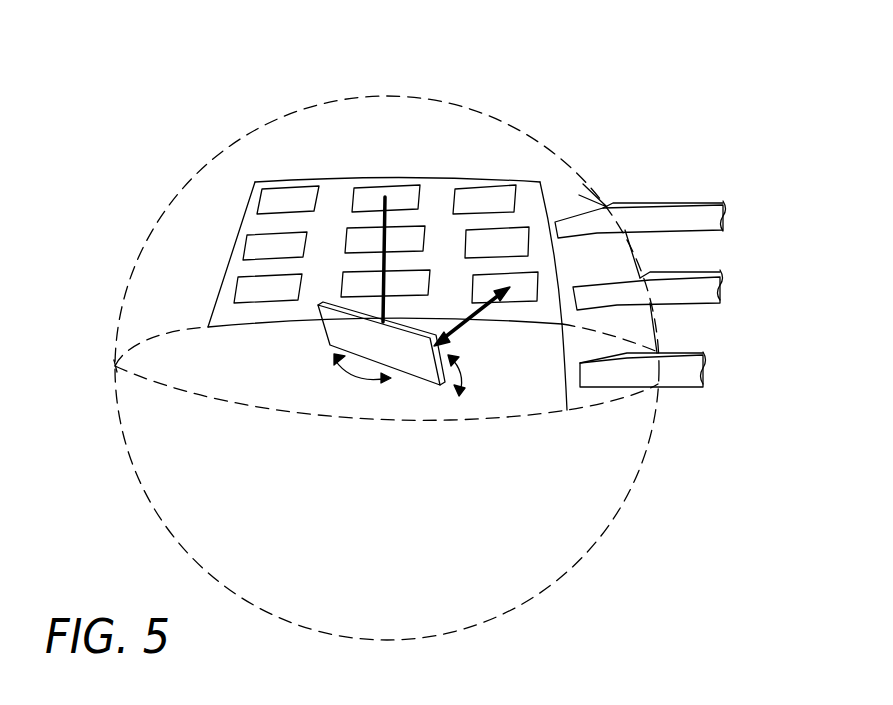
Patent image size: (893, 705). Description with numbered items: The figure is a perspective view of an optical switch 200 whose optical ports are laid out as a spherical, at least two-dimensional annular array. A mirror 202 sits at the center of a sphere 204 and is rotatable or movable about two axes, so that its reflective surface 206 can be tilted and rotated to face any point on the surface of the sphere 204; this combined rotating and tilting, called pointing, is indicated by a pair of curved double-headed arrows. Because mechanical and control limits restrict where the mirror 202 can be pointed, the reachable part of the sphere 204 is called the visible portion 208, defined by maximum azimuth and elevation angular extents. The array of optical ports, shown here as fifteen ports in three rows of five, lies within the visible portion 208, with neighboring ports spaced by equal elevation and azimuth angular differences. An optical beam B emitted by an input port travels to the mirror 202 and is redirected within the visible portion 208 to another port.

The optical switch 200 is at (163, 55).
The mirror 202 is at (338, 328).
The sphere 204 is at (115, 365).
The reflective surface 206 is at (445, 334).
The visible portion 208 is at (257, 190).
The optical beam B is at (450, 317).